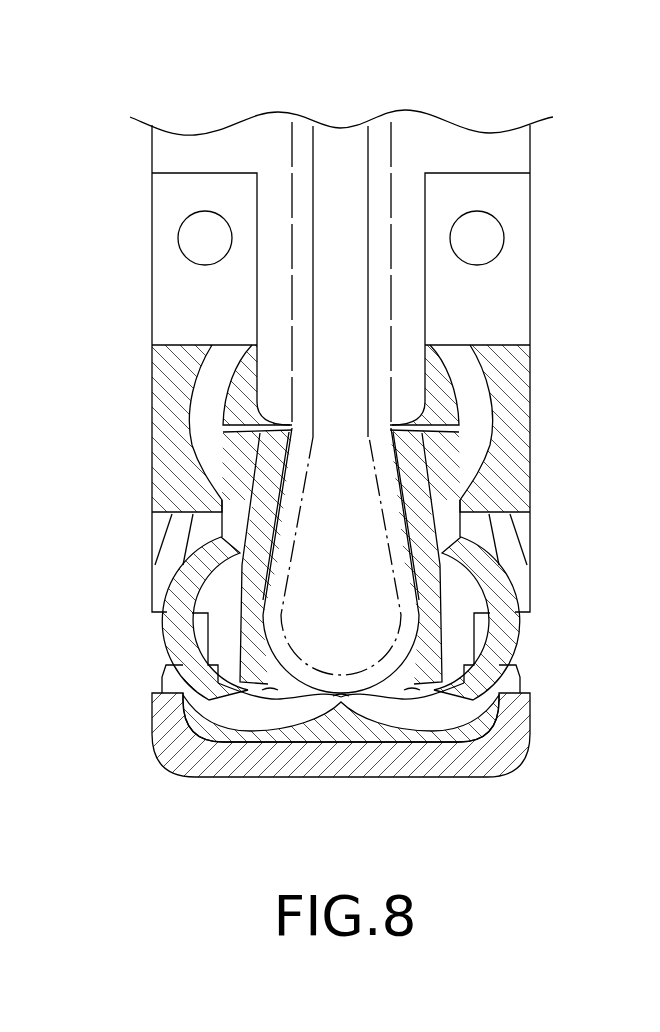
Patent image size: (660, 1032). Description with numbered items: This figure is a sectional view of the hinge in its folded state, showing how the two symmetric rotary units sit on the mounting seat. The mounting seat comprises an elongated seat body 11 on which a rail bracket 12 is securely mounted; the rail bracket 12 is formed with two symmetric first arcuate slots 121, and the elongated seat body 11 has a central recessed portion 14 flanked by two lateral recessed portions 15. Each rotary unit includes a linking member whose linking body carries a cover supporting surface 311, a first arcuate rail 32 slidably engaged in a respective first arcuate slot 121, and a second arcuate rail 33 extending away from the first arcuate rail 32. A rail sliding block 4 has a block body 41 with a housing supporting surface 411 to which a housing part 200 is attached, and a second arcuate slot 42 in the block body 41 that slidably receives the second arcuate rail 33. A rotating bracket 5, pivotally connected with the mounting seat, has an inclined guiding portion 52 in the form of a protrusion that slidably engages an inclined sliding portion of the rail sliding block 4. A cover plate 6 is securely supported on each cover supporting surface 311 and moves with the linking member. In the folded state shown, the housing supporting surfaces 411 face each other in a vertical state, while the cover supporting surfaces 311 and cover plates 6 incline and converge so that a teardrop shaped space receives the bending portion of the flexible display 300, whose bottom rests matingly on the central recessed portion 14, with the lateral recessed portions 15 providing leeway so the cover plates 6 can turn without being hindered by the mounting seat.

The housing part 200 is at (215, 148).
The flexible display 300 is at (368, 177).
The cover supporting surface 311 is at (262, 465).
The rail sliding block 4 is at (170, 203).
The housing supporting surface 411 is at (256, 292).
The block body 41 is at (510, 352).
The second arcuate slot 42 is at (190, 407).
The second arcuate rail 33 is at (212, 370).
The cover plate 6 is at (262, 503).
The rotating bracket 5 is at (150, 542).
The inclined guiding portion 52 is at (170, 563).
The first arcuate rail 32 is at (178, 637).
The elongated seat body 11 is at (337, 760).
The rail bracket 12 is at (347, 727).
The first arcuate slot 121 is at (250, 713).
The lateral recessed portion 15 is at (270, 689).
The central recessed portion 14 is at (340, 694).